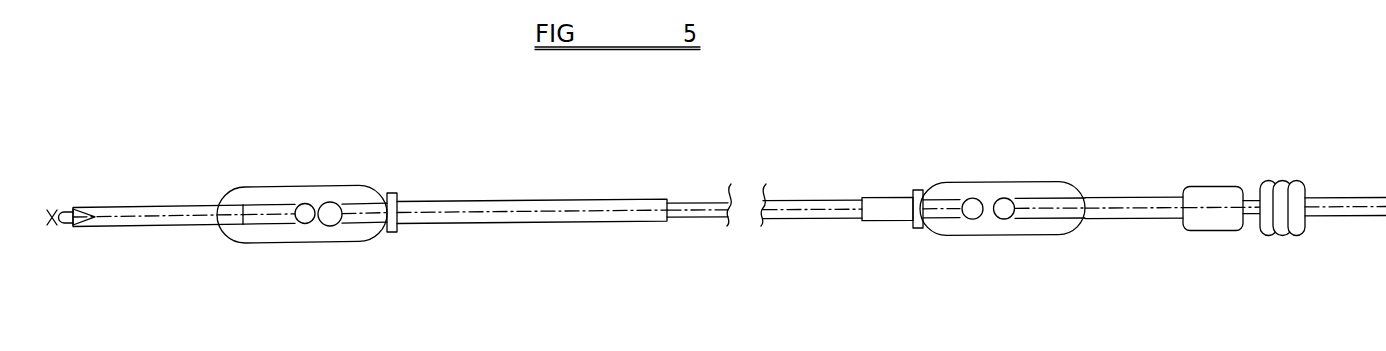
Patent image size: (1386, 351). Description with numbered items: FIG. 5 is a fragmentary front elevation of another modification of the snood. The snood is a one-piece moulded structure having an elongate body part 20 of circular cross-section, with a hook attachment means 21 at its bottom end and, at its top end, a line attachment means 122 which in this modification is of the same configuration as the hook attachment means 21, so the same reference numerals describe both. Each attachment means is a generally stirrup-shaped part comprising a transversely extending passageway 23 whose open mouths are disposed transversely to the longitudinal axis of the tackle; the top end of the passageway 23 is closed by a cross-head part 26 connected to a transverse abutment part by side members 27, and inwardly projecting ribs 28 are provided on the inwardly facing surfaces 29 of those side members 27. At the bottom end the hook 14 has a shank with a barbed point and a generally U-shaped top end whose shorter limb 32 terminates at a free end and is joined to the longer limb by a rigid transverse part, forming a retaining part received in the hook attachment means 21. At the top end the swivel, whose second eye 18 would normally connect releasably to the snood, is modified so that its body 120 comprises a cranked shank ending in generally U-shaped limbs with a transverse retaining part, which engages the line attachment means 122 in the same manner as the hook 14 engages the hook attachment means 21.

The hook 14 is at (163, 206).
The second eye 18 is at (610, 200).
The body part 20 is at (913, 228).
The hook attachment means 21 is at (357, 187).
The passageway 23 is at (319, 205).
The cross-head part 26 is at (364, 205).
The side members 27 is at (289, 186).
The inwardly projecting ribs 28 is at (302, 204).
The inwardly facing surfaces 29 is at (335, 202).
The shorter limb 32 is at (258, 223).
The body 120 is at (1120, 218).
The line attachment means 122 is at (931, 235).